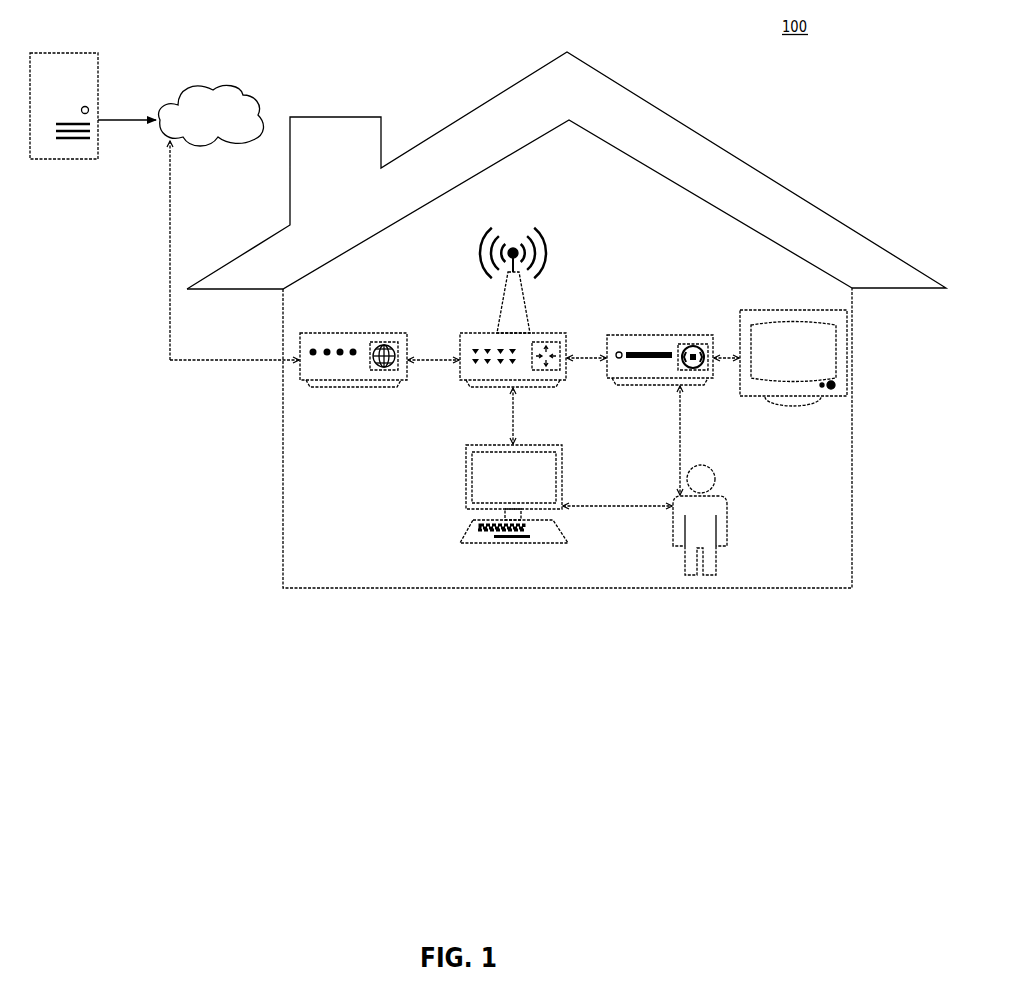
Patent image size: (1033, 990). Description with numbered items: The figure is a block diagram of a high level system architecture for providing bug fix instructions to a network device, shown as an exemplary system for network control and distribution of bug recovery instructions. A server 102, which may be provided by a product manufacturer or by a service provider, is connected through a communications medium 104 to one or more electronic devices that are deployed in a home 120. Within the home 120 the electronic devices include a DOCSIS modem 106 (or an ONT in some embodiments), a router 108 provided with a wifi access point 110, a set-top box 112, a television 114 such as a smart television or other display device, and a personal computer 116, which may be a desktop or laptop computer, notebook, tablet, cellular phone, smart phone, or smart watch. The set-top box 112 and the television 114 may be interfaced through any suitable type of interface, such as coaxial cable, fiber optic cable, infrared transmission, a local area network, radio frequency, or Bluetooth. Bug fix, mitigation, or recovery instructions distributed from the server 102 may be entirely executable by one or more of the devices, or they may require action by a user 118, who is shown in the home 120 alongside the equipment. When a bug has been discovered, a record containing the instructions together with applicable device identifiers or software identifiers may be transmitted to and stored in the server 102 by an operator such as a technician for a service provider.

The server 102 is at (105, 53).
The communications medium 104 is at (232, 88).
The DOCSIS modem 106 is at (376, 333).
The router 108 is at (533, 333).
The wifi access point 110 is at (543, 237).
The set-top box 112 is at (644, 335).
The television 114 is at (777, 306).
The personal computer 116 is at (562, 452).
The user 118 is at (707, 465).
The home 120 is at (733, 162).